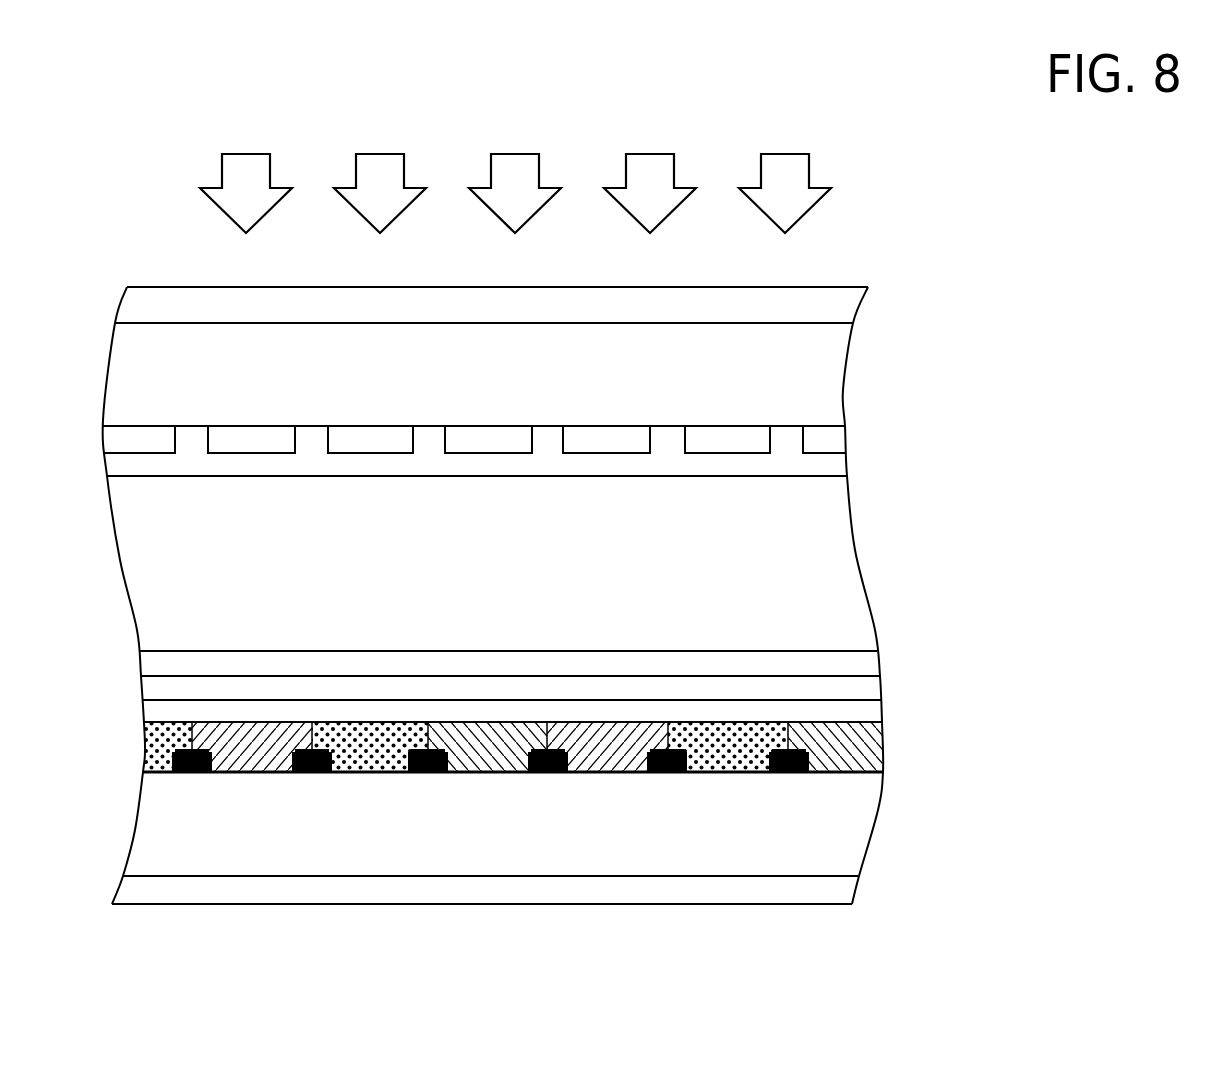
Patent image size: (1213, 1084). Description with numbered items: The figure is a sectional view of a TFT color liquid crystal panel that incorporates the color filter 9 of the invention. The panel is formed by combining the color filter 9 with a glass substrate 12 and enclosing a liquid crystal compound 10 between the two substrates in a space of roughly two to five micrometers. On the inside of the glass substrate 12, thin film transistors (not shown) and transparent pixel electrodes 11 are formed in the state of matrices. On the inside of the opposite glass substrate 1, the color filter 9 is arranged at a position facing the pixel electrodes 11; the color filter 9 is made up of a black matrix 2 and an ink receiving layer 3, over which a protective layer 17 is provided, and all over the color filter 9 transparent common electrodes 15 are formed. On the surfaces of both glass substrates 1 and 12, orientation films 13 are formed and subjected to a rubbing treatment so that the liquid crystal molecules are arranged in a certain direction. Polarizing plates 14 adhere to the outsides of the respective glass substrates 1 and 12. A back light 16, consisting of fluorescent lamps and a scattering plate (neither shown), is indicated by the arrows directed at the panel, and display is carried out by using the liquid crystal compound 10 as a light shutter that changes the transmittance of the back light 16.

The glass substrate 1 is at (850, 830).
The black matrix 2 is at (808, 772).
The ink receiving layer 3 is at (878, 743).
The color filter 9 is at (554, 755).
The liquid crystal compound 10 is at (850, 555).
The transparent pixel electrodes 11 is at (837, 432).
The glass substrate 12 is at (838, 370).
The orientation films 13 is at (838, 462).
The polarizing plates 14 is at (848, 305).
The transparent common electrodes 15 is at (875, 686).
The back light 16 is at (808, 168).
The protective layer 17 is at (872, 712).